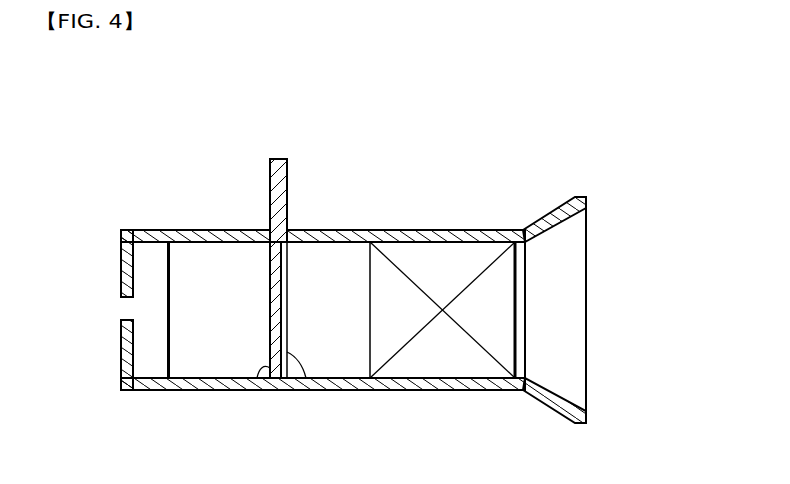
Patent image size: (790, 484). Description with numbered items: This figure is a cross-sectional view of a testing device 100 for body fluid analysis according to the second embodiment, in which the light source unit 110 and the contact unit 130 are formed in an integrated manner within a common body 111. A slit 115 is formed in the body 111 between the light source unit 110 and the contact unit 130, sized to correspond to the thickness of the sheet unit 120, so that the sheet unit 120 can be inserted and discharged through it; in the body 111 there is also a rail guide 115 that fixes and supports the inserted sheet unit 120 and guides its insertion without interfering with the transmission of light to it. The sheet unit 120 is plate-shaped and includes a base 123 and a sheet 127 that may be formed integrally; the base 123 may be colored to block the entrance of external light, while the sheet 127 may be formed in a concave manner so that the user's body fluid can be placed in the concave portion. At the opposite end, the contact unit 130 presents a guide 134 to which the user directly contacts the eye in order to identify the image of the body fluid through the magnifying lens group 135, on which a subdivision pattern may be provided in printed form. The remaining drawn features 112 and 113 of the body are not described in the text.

The testing device 100 is at (423, 160).
The light source unit 110 is at (197, 228).
The body 111 is at (218, 386).
The opening in side wall of housing 112 is at (128, 309).
The partition plate 113 is at (163, 369).
The slit 115 is at (288, 219).
The sheet unit 120 is at (293, 178).
The base 123 is at (283, 157).
The sheet 127 is at (291, 362).
The contact unit 130 is at (465, 228).
The guide 134 is at (578, 196).
The magnifying lens group 135 is at (507, 317).